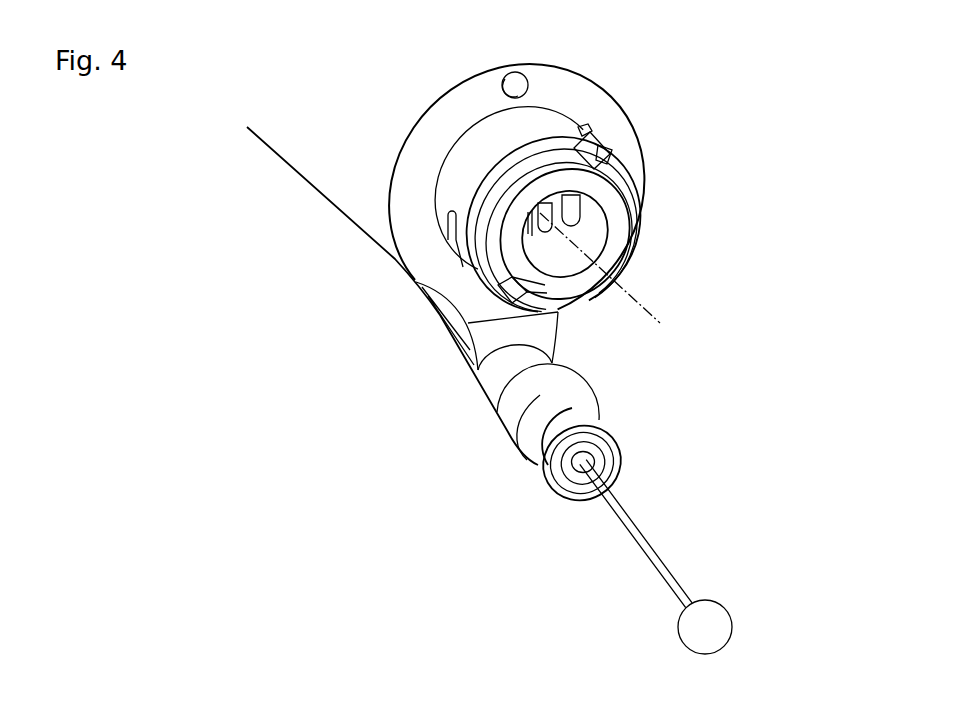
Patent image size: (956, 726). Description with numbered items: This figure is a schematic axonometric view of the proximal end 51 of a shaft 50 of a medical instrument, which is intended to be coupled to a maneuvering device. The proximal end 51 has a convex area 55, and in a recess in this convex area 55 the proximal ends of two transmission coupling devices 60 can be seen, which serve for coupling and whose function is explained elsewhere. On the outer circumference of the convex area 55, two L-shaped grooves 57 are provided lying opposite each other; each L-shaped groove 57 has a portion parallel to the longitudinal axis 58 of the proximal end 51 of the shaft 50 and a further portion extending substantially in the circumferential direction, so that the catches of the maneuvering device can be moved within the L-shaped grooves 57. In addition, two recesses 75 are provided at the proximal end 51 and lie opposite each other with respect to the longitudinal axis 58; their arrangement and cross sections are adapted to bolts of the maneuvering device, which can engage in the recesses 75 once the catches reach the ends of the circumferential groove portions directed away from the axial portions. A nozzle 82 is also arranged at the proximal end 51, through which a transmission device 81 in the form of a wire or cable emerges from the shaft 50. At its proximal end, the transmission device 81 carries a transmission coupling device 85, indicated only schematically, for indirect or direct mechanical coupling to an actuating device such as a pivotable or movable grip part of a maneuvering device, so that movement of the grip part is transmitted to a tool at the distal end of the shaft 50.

The shaft 50 is at (712, 147).
The proximal end 51 is at (522, 264).
The convex area 55 is at (453, 183).
The L-shaped grooves 57 is at (588, 133).
The longitudinal axis 58 is at (628, 290).
The transmission coupling devices 60 is at (572, 207).
The recesses 75 is at (517, 87).
The transmission device 81 is at (643, 533).
The nozzle 82 is at (545, 472).
The transmission coupling device 85 is at (723, 633).